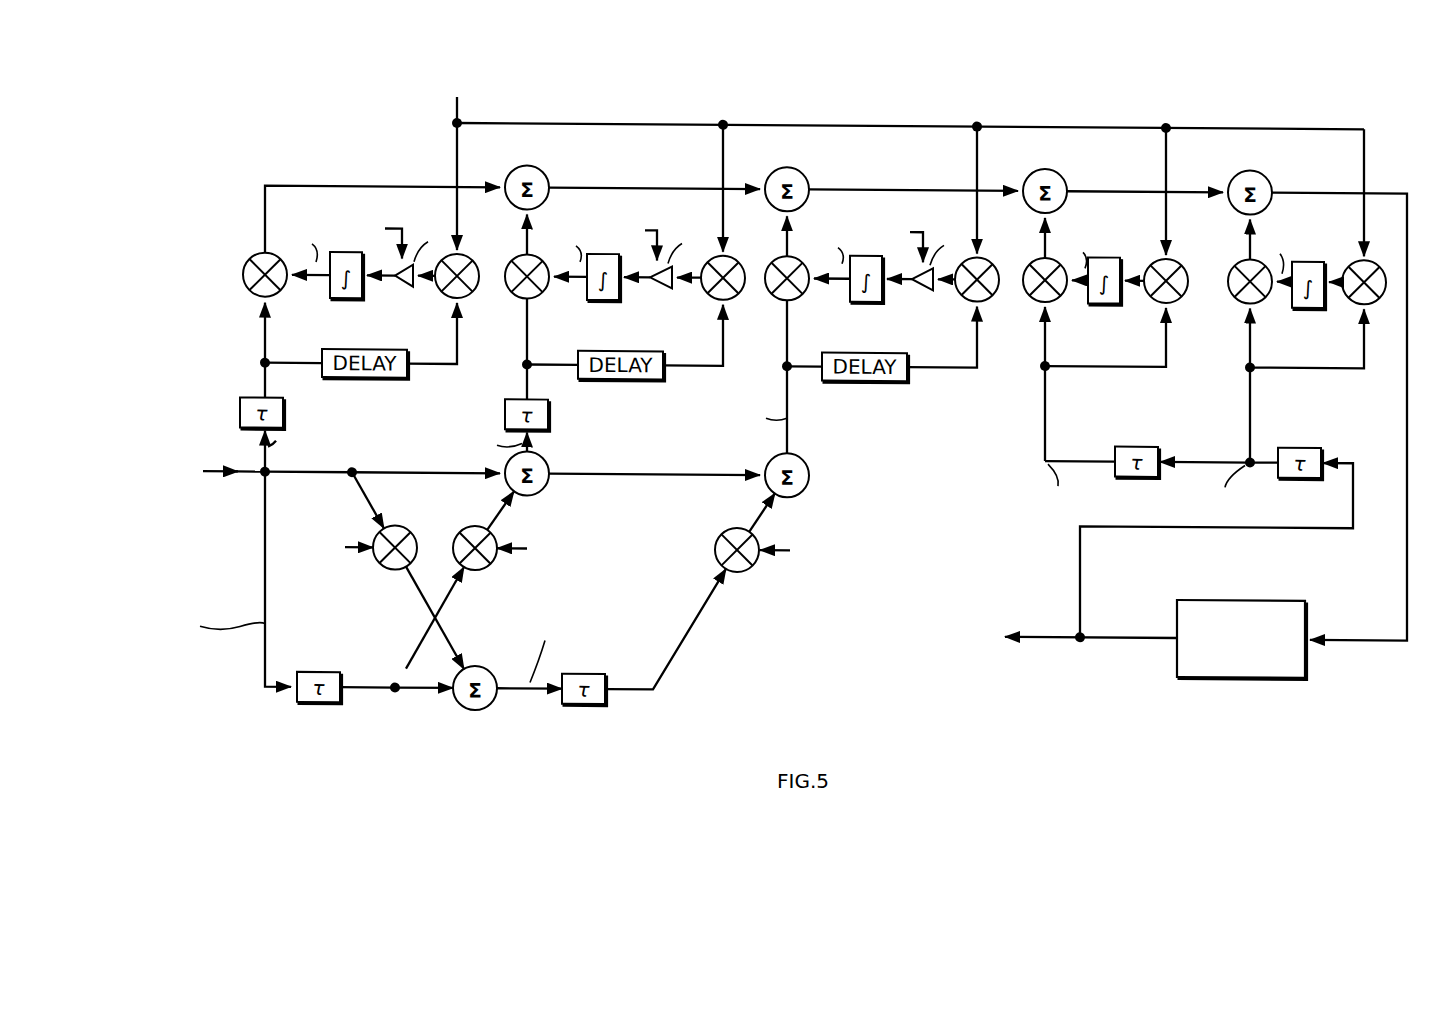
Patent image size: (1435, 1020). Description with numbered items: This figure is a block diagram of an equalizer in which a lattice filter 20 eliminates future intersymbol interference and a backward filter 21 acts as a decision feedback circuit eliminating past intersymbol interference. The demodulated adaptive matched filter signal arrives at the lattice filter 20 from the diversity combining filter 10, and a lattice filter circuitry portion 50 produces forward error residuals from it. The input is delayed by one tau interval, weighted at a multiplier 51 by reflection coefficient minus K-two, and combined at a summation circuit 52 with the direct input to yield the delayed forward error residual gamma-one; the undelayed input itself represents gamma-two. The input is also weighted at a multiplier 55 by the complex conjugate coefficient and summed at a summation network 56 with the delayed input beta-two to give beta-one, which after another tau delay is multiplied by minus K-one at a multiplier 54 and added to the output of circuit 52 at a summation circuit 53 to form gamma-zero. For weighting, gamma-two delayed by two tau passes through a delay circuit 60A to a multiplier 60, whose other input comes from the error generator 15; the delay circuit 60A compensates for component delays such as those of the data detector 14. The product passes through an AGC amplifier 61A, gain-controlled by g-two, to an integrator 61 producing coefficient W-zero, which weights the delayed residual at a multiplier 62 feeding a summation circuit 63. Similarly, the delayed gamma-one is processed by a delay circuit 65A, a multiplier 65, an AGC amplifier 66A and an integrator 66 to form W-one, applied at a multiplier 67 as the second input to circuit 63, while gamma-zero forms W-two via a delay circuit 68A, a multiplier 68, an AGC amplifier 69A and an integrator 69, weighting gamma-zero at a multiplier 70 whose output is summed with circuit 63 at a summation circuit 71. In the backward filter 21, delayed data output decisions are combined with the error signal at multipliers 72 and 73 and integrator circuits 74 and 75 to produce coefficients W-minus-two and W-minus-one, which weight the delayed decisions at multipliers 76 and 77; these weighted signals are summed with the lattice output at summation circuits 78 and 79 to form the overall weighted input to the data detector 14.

The diversity combining filter 10 is at (167, 472).
The data detector 14 is at (1258, 595).
The error generator 15 is at (428, 67).
The lattice filter 20 is at (543, 448).
The backward filter 21 is at (1153, 389).
The lattice filter circuitry portion 50 is at (710, 635).
The multiplier 51 is at (464, 523).
The summation circuit 52 is at (549, 457).
The summation circuit 53 is at (796, 462).
The multiplier 54 is at (715, 550).
The multiplier 55 is at (390, 568).
The summation network 56 is at (482, 664).
The multiplier 60 is at (470, 296).
The delay circuit 60A is at (374, 380).
The integrator 61 is at (332, 302).
The AGC amplifier 61A is at (400, 288).
The multiplier 62 is at (242, 277).
The summation circuit 63 is at (547, 178).
The multiplier 65 is at (734, 296).
The delay circuit 65A is at (614, 380).
The integrator 66 is at (598, 300).
The AGC amplifier 66A is at (655, 288).
The multiplier 67 is at (506, 258).
The multiplier 68 is at (988, 294).
The delay circuit 68A is at (854, 380).
The integrator 69 is at (856, 300).
The AGC amplifier 69A is at (925, 288).
The multiplier 70 is at (774, 258).
The summation circuit 71 is at (807, 178).
The multiplier 72 is at (1177, 260).
The multiplier 73 is at (1377, 266).
The integrator circuit 74 is at (1106, 253).
The integrator circuit 75 is at (1312, 266).
The multiplier 76 is at (1032, 258).
The multiplier 77 is at (1238, 258).
The summation circuit 78 is at (1069, 178).
The summation circuit 79 is at (1265, 185).